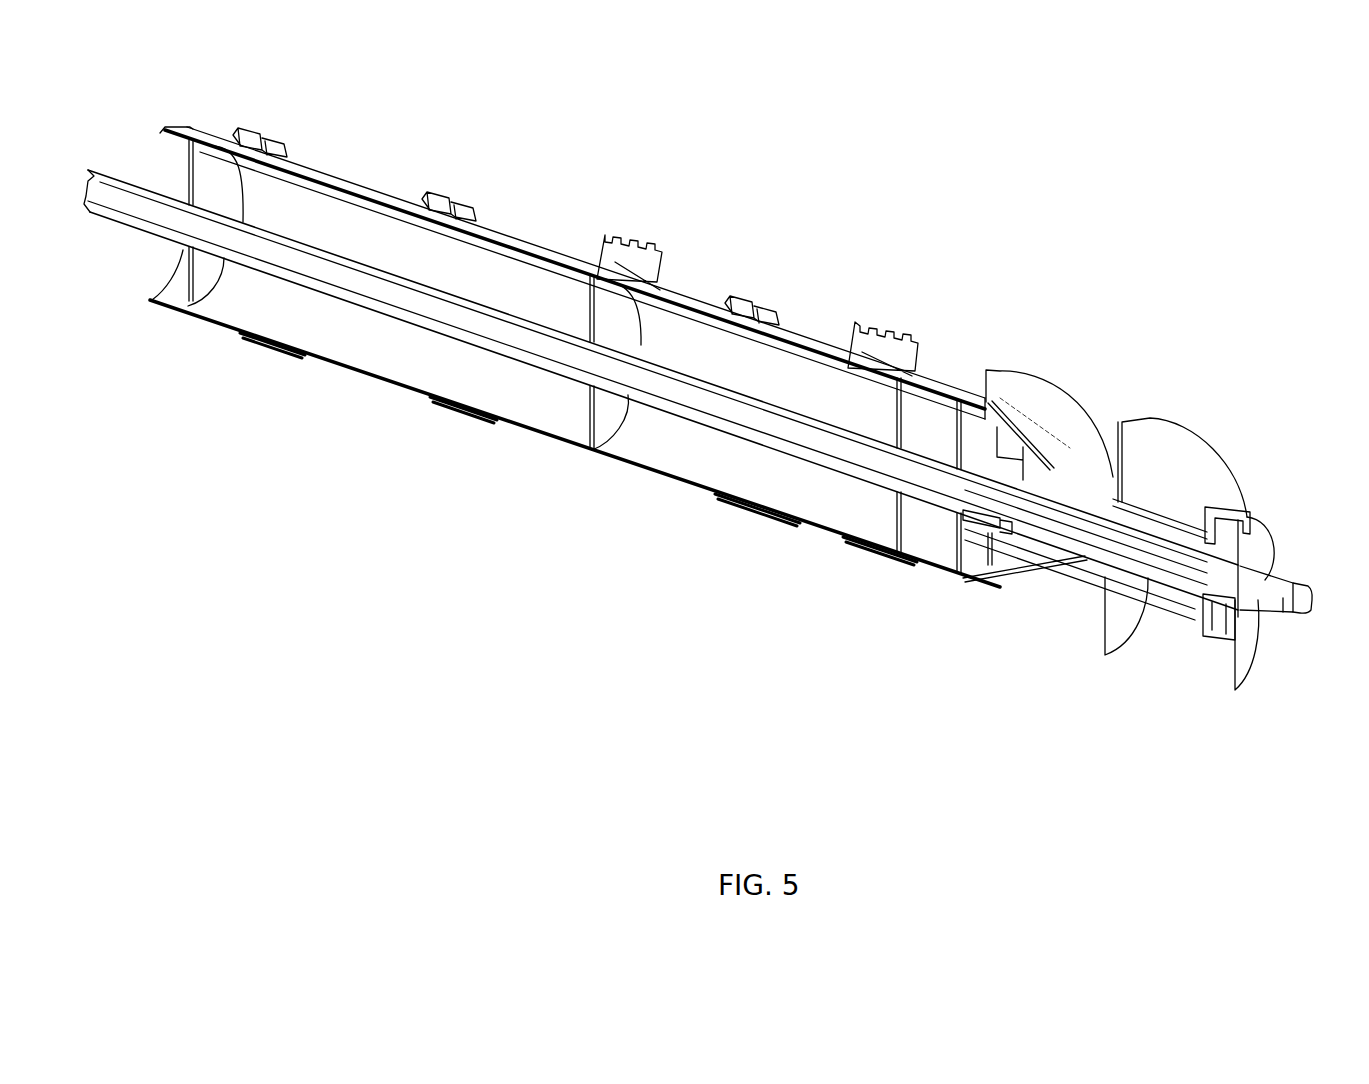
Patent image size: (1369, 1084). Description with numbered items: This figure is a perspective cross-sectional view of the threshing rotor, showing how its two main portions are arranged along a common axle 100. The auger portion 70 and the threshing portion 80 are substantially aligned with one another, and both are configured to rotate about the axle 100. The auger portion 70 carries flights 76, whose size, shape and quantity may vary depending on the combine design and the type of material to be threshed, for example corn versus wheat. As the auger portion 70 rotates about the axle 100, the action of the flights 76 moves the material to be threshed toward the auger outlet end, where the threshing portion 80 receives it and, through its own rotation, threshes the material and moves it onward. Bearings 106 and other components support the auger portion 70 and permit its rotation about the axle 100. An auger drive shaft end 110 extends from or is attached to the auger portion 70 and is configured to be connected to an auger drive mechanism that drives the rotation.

The auger portion 70 is at (611, 350).
The flights 76 is at (1183, 448).
The threshing portion 80 is at (426, 459).
The axle 100 is at (697, 400).
The bearings 106 is at (985, 528).
The auger drive shaft end 110 is at (1298, 613).